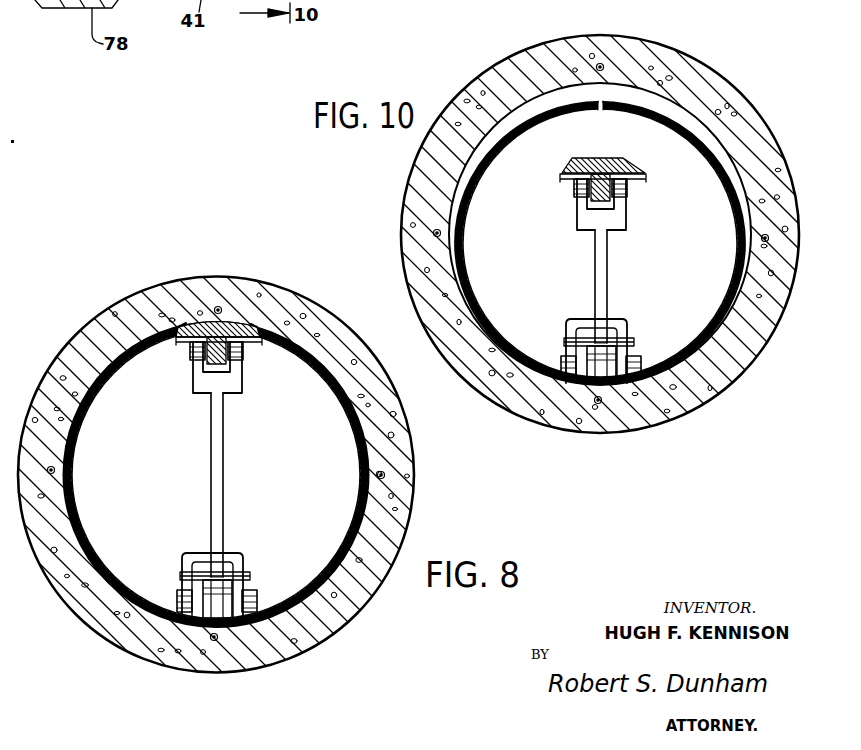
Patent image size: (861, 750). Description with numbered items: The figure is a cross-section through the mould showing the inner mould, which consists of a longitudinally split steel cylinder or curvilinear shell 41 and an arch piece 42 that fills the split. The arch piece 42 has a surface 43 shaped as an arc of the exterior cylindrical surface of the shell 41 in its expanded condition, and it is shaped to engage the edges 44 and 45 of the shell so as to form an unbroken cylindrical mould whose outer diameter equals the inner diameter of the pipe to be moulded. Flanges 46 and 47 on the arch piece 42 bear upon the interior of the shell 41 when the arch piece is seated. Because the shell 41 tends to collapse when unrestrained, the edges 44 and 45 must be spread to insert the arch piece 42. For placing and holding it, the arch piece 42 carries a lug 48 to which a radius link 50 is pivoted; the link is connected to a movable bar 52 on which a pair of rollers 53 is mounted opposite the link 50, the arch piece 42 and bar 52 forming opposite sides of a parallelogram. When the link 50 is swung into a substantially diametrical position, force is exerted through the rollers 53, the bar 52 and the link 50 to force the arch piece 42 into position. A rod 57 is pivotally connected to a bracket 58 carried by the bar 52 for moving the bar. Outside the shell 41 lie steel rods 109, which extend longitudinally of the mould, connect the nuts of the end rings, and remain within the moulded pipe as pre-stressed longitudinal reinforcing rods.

In FIG. 8, the shell 41 is at (362, 430).
In FIG. 10, the shell 41 is at (738, 258).
In FIG. 8, the arch piece 42 is at (236, 320).
In FIG. 10, the arch piece 42 is at (623, 157).
In FIG. 8, the surface 43 is at (238, 278).
In FIG. 10, the surface 43 is at (692, 137).
In FIG. 8, the edge 44 is at (185, 323).
In FIG. 10, the edge 44 is at (600, 104).
In FIG. 8, the edge 45 is at (253, 325).
In FIG. 10, the edge 45 is at (603, 104).
In FIG. 8, the flange 46 is at (178, 340).
In FIG. 10, the flange 46 is at (547, 195).
In FIG. 8, the flange 47 is at (255, 342).
In FIG. 10, the flange 47 is at (650, 197).
In FIG. 8, the lug 48 is at (208, 368).
In FIG. 10, the lug 48 is at (567, 212).
In FIG. 8, the radius link 50 is at (213, 483).
In FIG. 10, the radius link 50 is at (602, 263).
In FIG. 8, the movable bar 52 is at (224, 605).
In FIG. 10, the movable bar 52 is at (621, 406).
In FIG. 8, the rollers 53 is at (178, 598).
In FIG. 10, the rollers 53 is at (595, 341).
In FIG. 8, the rod 57 is at (245, 552).
In FIG. 10, the rod 57 is at (618, 332).
In FIG. 8, the bracket 58 is at (238, 580).
In FIG. 10, the bracket 58 is at (632, 348).
In FIG. 8, the steel rod 109 is at (218, 306).
In FIG. 10, the steel rod 109 is at (600, 64).